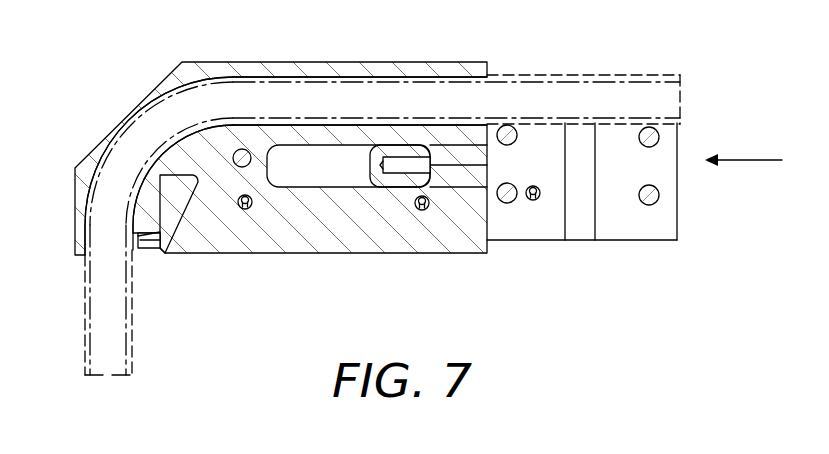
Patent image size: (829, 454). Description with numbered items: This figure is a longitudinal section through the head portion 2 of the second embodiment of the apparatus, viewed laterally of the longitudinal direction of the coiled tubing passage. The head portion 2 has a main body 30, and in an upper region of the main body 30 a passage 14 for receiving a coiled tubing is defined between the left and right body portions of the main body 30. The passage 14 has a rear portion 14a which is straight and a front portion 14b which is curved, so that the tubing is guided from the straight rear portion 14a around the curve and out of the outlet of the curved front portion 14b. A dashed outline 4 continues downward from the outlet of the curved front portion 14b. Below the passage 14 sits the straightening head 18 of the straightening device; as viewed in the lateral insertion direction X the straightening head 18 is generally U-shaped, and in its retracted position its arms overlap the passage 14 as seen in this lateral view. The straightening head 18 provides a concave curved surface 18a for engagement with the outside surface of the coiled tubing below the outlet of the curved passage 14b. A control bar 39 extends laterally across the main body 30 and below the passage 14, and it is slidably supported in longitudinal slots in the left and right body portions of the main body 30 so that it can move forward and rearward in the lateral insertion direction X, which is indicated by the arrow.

The head portion 2 is at (249, 58).
The pipe / hose 4 is at (85, 333).
The passage 14 is at (382, 131).
The rear portion 14a is at (400, 75).
The front portion 14b is at (140, 111).
The straightening head 18 is at (173, 218).
The concave curved surface 18a is at (152, 248).
The main body 30 is at (298, 240).
The control bar 39 is at (390, 180).
The lateral insertion direction X is at (745, 158).